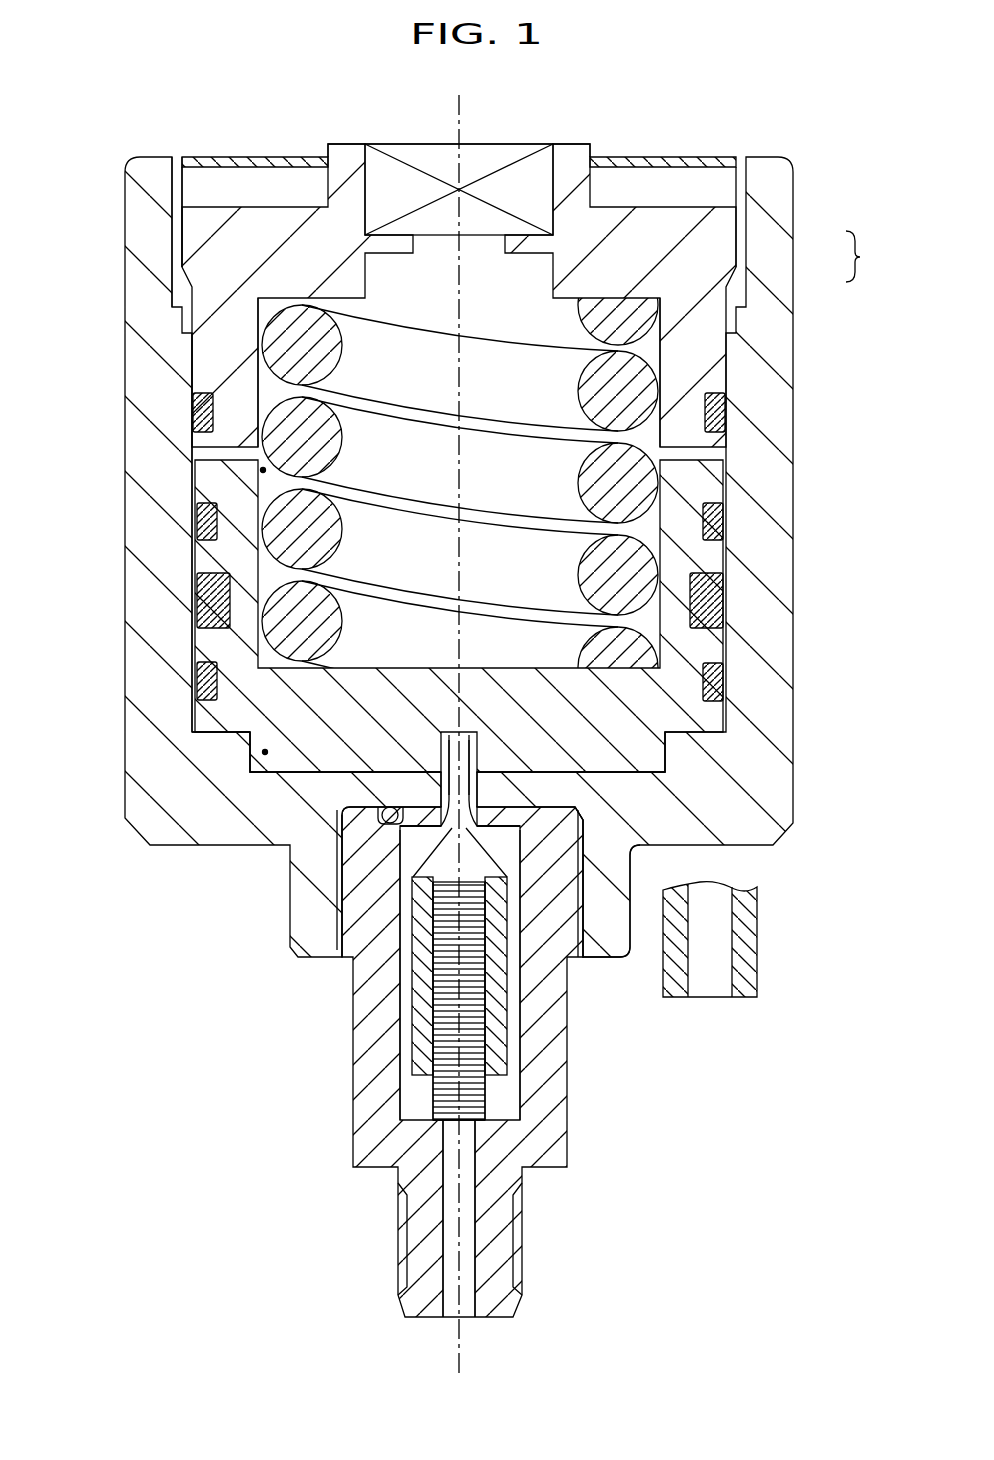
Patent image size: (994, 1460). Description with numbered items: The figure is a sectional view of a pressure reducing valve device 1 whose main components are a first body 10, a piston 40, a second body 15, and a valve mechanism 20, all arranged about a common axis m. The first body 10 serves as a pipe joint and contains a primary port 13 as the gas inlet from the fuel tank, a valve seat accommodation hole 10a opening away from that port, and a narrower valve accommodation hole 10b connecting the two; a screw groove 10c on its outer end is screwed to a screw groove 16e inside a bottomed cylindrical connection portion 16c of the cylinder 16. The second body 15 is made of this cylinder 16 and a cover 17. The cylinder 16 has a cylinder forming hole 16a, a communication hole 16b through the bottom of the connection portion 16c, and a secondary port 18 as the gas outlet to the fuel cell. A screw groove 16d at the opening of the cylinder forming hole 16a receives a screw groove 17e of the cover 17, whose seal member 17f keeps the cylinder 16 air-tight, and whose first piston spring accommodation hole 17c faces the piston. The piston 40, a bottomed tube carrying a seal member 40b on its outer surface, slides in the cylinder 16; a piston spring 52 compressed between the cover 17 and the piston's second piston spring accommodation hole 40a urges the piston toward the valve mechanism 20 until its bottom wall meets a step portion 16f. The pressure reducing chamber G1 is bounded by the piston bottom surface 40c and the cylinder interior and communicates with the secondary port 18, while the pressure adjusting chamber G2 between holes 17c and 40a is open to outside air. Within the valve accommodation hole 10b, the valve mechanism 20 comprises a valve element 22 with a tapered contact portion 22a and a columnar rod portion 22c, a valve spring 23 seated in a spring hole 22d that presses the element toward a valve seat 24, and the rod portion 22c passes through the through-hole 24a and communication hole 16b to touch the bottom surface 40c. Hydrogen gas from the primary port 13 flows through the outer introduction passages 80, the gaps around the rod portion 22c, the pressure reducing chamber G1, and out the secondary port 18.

The pressure reducing valve device 1 is at (738, 140).
The first body 10 is at (296, 1063).
The valve seat accommodation hole 10a is at (386, 806).
The valve accommodation hole 10b is at (400, 910).
The screw groove 10c is at (340, 863).
The primary port 13 is at (467, 1260).
The second body 15 is at (867, 256).
The cylinder 16 is at (780, 274).
The cylinder forming hole 16a is at (196, 358).
The communication hole 16b is at (443, 803).
The connection portion 16c is at (613, 908).
The screw groove 16d is at (188, 170).
The screw groove 16e is at (575, 962).
The step portion 16f is at (192, 717).
The cover 17 is at (717, 235).
The first piston spring accommodation hole 17c is at (650, 355).
The screw groove 17e is at (177, 228).
The seal member 17f is at (722, 418).
The secondary port 18 is at (693, 983).
The valve mechanism 20 is at (508, 1000).
The valve element 22 is at (497, 1035).
The contact portion 22a is at (480, 855).
The rod portion 22c is at (475, 750).
The spring hole 22d is at (433, 1020).
The valve spring 23 is at (487, 1104).
The valve seat 24 is at (517, 810).
The through-hole 24a is at (572, 834).
The piston 40 is at (665, 718).
The second piston spring accommodation hole 40a is at (720, 520).
The seal member 40b is at (722, 677).
The bottom surface 40c is at (667, 757).
The piston spring 52 is at (288, 330).
The outer introduction passages 80 is at (402, 978).
The pressure reducing chamber G1 is at (262, 753).
The pressure adjusting chamber G2 is at (260, 469).
The axis m is at (459, 719).